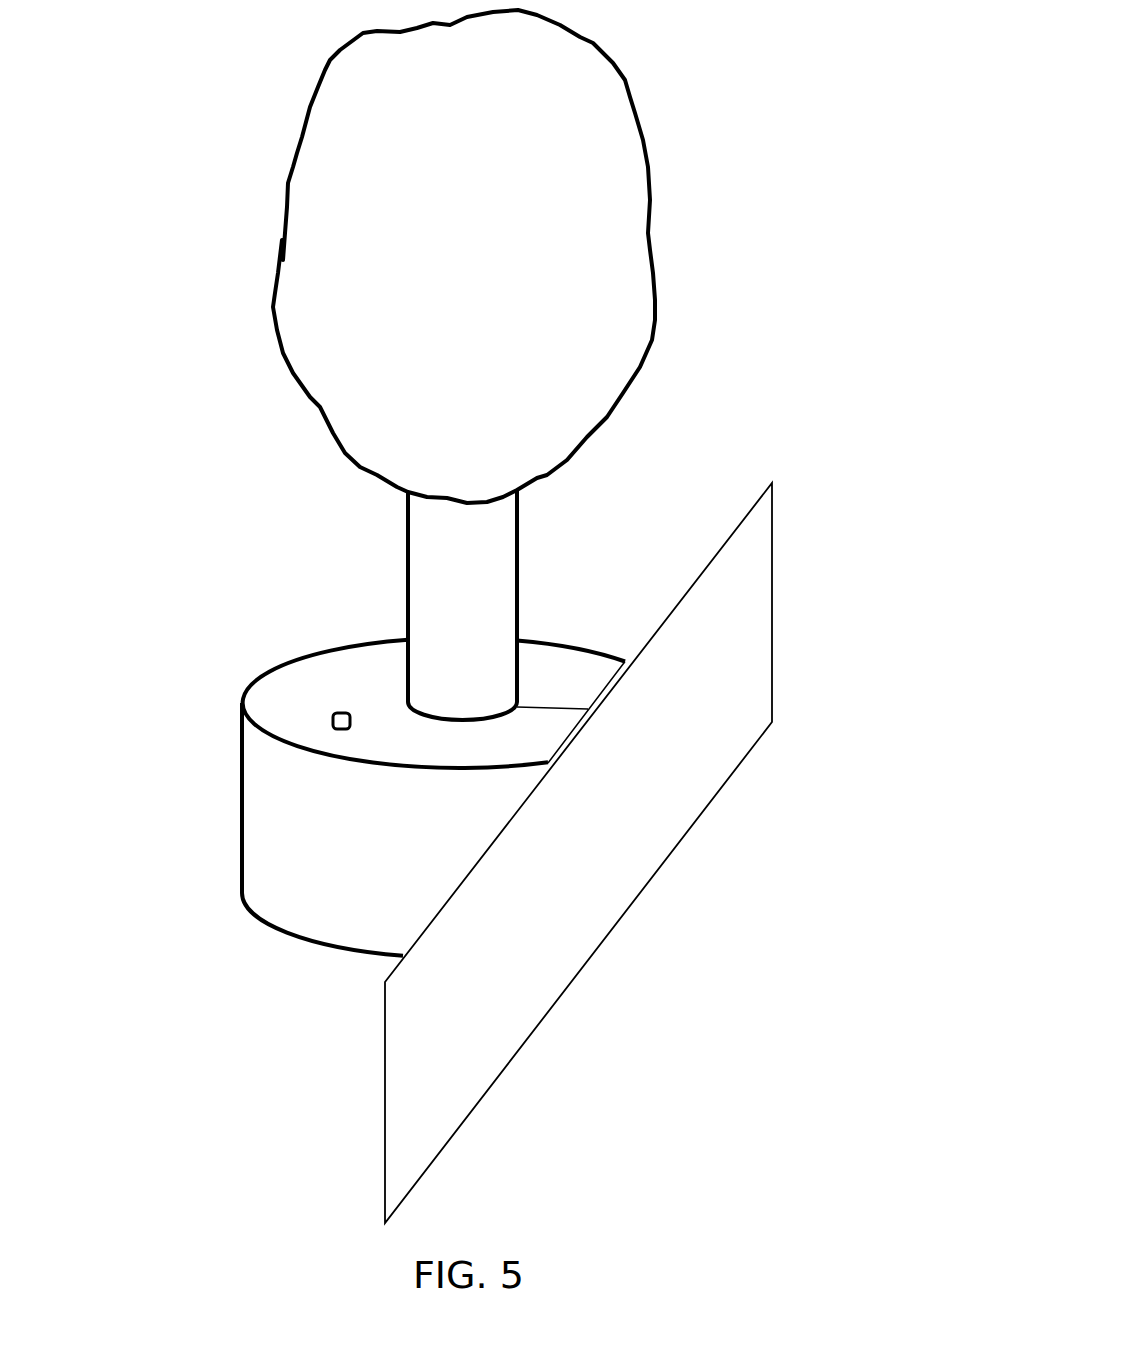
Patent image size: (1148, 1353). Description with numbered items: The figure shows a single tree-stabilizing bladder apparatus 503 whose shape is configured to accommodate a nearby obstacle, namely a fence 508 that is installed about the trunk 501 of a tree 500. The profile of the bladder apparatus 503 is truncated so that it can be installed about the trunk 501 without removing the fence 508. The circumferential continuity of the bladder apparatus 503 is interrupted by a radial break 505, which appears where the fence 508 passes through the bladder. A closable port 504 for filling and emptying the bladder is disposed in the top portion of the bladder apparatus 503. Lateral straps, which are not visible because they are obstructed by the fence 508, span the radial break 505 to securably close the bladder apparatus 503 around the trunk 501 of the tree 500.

The tree 500 is at (332, 262).
The trunk 501 is at (407, 565).
The bladder apparatus 503 is at (296, 845).
The closable port 504 is at (330, 720).
The radial break 505 is at (555, 705).
The fence 508 is at (733, 607).